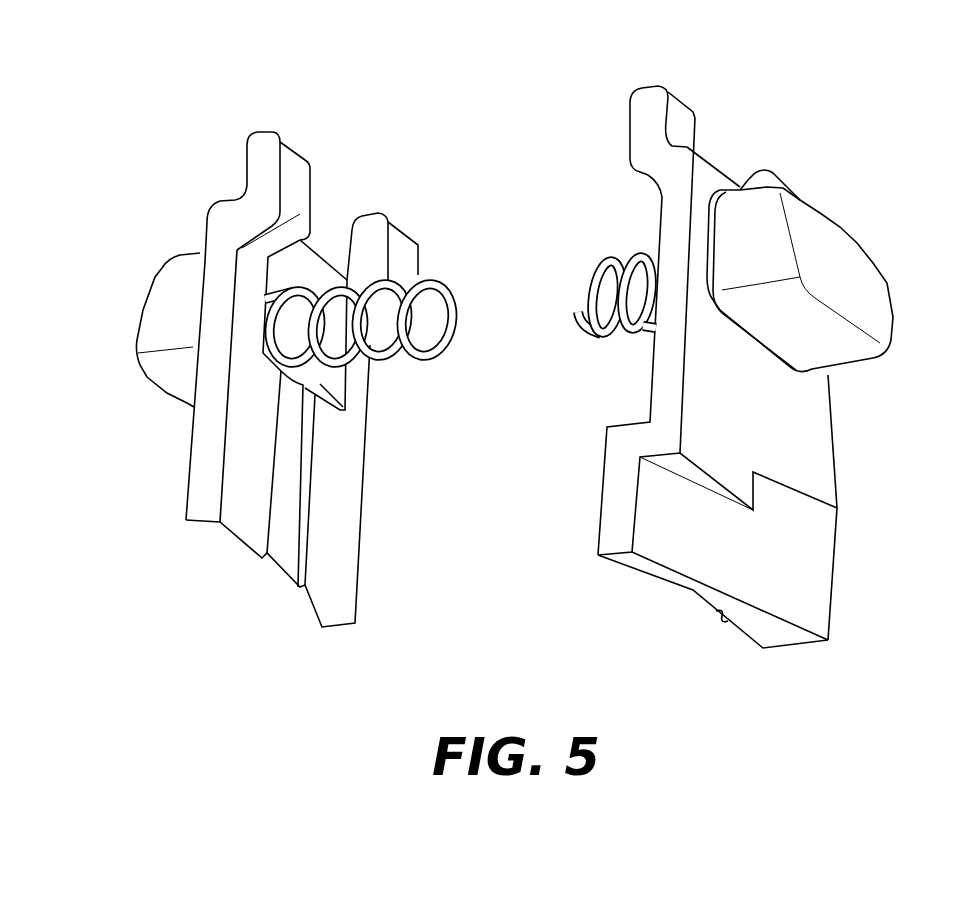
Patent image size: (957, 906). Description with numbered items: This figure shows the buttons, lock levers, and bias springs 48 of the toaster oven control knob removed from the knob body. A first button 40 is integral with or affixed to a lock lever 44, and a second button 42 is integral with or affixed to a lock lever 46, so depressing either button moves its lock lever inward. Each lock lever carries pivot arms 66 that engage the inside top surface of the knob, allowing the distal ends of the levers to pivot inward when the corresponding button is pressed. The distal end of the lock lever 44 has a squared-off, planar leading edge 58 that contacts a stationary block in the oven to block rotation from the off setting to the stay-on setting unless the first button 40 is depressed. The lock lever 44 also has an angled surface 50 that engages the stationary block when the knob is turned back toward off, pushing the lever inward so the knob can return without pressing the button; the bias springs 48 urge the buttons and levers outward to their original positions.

The first button 40 is at (870, 283).
The second button 42 is at (165, 303).
The lock lever 44 is at (680, 150).
The lock lever 46 is at (221, 210).
The spring 48 is at (427, 283).
The angled surface 50 is at (670, 555).
The leading edge 58 is at (846, 581).
The pivot arms 66 is at (257, 143).